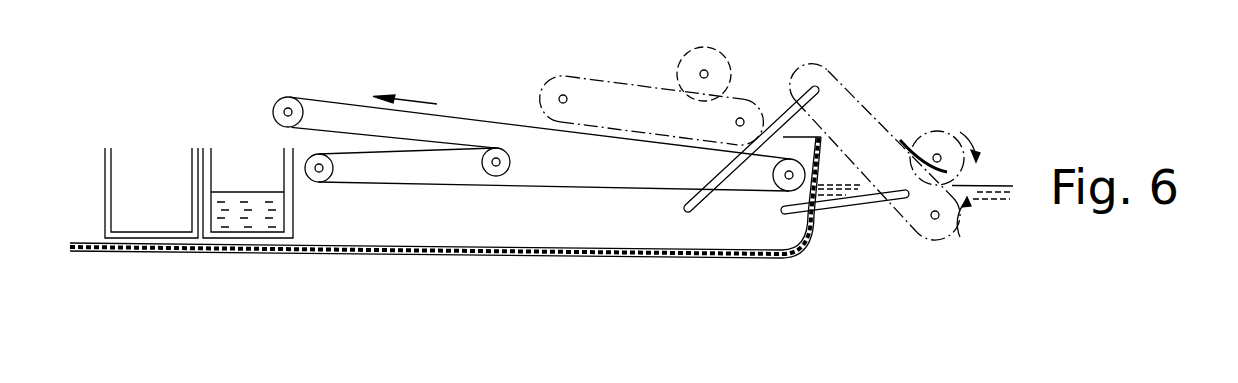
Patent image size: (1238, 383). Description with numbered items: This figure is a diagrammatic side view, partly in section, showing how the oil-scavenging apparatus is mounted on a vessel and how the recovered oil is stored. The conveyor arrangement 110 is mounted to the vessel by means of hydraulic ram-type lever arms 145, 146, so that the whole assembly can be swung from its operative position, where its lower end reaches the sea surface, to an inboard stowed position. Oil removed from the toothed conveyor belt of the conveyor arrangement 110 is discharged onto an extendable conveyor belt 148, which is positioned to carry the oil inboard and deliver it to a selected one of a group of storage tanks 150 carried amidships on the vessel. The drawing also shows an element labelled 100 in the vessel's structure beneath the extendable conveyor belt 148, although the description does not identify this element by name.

The conveyor tray 100 is at (497, 225).
The conveyor arrangement 110 is at (888, 118).
The hydraulic ram-type lever arm 145 is at (717, 180).
The hydraulic ram-type lever arm 146 is at (857, 198).
The extendable conveyor belt 148 is at (503, 123).
The storage tanks 150 is at (240, 223).